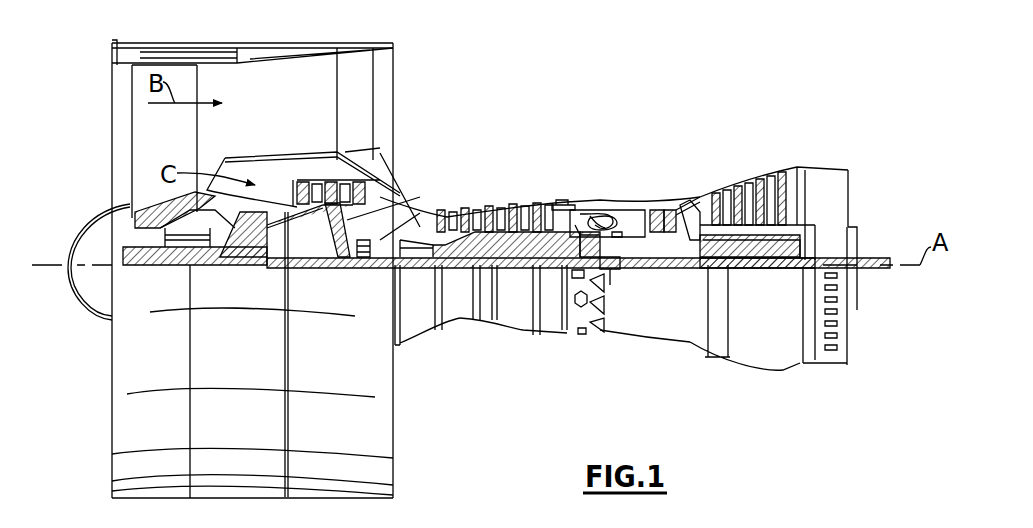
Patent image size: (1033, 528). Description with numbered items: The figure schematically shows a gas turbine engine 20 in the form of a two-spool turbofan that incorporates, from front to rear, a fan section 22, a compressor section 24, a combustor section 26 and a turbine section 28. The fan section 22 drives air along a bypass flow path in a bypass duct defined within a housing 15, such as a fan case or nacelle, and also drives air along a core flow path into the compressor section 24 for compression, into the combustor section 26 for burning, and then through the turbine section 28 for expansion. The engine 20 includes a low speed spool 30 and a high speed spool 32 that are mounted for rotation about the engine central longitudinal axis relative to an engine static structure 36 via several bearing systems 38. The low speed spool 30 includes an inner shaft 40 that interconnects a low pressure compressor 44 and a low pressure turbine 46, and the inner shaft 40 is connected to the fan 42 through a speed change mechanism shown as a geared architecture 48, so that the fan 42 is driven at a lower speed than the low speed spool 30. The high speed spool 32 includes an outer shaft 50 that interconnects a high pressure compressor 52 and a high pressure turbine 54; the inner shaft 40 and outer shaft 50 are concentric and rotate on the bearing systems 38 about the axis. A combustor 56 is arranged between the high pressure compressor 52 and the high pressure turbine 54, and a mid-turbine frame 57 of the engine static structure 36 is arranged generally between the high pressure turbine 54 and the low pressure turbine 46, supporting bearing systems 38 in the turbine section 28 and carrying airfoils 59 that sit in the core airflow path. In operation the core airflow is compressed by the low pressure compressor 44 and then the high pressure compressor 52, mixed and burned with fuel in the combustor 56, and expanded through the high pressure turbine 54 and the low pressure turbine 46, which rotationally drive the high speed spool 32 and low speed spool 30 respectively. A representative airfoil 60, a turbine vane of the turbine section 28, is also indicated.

The gas turbine engine 20 is at (610, 85).
The fan section 22 is at (200, 38).
The housing 15 is at (253, 47).
The fan 42 is at (182, 146).
The low pressure compressor 44 is at (382, 165).
The geared architecture 48 is at (257, 253).
The bearing systems 38 is at (362, 250).
The low speed spool 30 is at (517, 273).
The compressor section 24 is at (432, 193).
The high pressure compressor 52 is at (498, 230).
The high speed spool 32 is at (552, 210).
The combustor section 26 is at (607, 182).
The combustor 56 is at (607, 217).
The high pressure turbine 54 is at (680, 207).
The mid-turbine frame 57 is at (693, 192).
The airfoil 60 is at (717, 197).
The turbine section 28 is at (735, 145).
The low pressure turbine 46 is at (758, 170).
The airfoils 59 is at (717, 240).
The inner shaft 40 is at (400, 330).
The engine static structure 36 is at (550, 333).
The outer shaft 50 is at (615, 250).